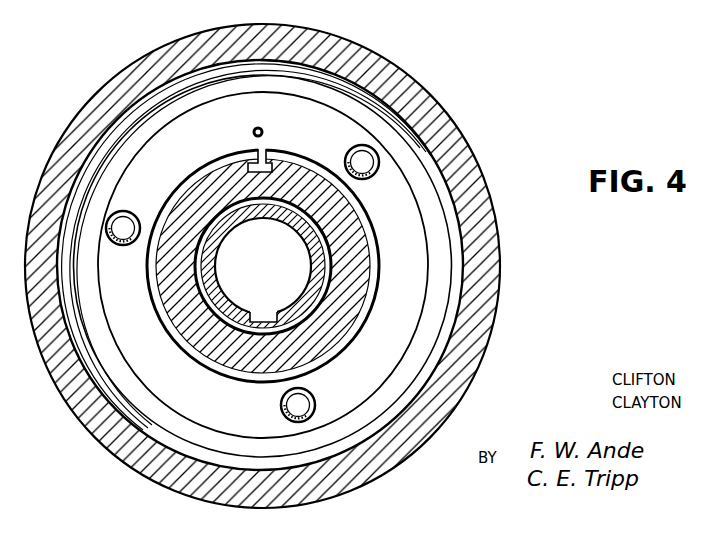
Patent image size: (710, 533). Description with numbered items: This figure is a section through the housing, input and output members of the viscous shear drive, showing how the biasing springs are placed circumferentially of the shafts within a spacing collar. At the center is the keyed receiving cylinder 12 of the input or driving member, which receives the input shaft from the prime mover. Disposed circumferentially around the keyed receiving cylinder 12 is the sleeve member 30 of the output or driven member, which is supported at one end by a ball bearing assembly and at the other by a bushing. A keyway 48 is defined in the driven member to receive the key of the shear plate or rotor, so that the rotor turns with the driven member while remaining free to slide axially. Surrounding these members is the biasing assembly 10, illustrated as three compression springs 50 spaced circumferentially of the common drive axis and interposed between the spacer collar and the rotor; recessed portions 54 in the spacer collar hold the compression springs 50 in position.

The biasing assembly 10 is at (143, 390).
The keyed receiving cylinder 12 is at (313, 280).
The sleeve member 30 is at (323, 338).
The keyway 48 is at (263, 152).
The compression springs 50 is at (126, 211).
The recessed portions 54 is at (132, 243).